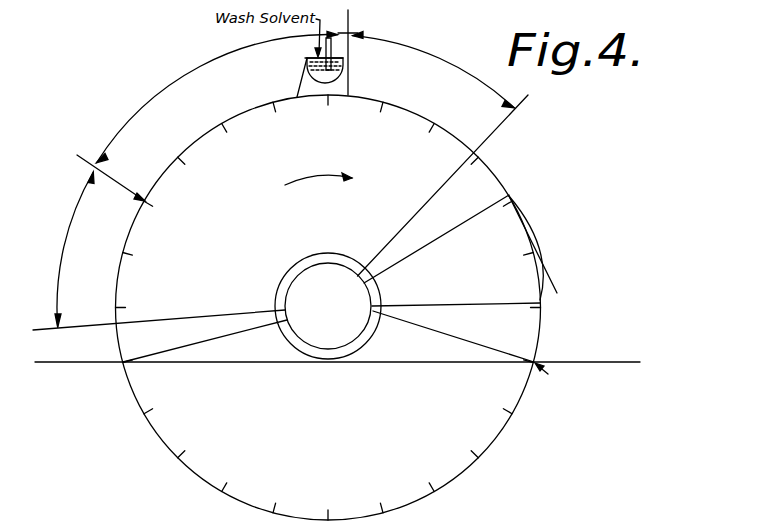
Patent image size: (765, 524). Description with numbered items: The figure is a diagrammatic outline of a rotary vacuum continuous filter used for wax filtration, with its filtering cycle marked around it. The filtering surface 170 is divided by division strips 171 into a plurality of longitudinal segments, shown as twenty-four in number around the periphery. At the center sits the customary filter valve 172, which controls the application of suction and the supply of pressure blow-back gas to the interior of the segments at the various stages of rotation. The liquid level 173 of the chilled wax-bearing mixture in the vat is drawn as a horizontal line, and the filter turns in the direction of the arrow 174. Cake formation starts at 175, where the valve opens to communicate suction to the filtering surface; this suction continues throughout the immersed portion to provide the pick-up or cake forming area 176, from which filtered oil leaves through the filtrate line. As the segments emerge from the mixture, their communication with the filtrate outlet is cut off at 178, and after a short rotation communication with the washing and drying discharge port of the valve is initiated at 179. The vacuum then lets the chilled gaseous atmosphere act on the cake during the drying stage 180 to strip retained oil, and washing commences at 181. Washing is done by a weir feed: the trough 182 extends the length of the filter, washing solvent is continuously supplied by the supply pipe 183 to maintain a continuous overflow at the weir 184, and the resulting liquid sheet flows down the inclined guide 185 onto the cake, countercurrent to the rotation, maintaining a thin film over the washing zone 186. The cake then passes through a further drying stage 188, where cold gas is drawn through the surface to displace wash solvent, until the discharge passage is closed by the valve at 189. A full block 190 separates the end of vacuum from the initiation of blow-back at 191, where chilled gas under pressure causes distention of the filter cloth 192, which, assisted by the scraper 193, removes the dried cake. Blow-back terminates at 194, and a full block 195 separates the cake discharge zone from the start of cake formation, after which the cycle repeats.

The filtering surface 170 is at (163, 440).
The division strips 171 is at (187, 458).
The filter valve 172 is at (325, 272).
The liquid level 173 is at (54, 364).
The arrow 174 is at (313, 176).
The cake formation start point 175 is at (535, 362).
The pick-up or cake forming area 176 is at (346, 464).
The filtrate outlet cut-off point 178 is at (125, 366).
The washing and drying discharge port initiation point 179 is at (125, 323).
The drying stage 180 is at (66, 240).
The washing commencement point 181 is at (147, 202).
The trough 182 is at (337, 84).
The supply pipe 183 is at (329, 55).
The weir 184 is at (312, 58).
The inclined guide 185 is at (301, 73).
The washing zone 186 is at (167, 89).
The drying stage 188 is at (445, 61).
The discharge passage closing point 189 is at (473, 151).
The full block 190 is at (478, 165).
The blow-back initiation point 191 is at (509, 197).
The distention of the filter cloth 192 is at (526, 220).
The scraper 193 is at (544, 277).
The blow-back termination point 194 is at (540, 303).
The full block 195 is at (533, 329).